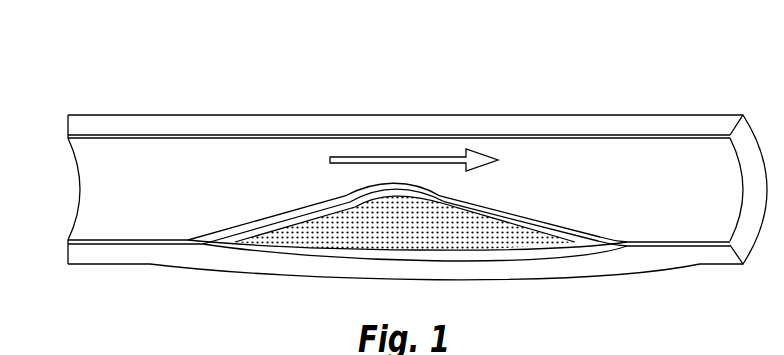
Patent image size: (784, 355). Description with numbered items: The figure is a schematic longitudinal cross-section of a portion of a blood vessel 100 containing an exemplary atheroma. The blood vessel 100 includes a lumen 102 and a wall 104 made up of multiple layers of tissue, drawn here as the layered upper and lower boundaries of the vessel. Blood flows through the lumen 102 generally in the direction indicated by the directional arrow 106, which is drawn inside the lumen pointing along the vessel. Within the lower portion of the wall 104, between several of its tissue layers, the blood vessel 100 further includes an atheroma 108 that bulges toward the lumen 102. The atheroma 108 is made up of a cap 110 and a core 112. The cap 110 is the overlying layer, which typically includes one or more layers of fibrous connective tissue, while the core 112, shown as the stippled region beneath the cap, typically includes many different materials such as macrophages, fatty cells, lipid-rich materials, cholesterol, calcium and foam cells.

The blood vessel 100 is at (389, 165).
The lumen 102 is at (690, 193).
The wall 104 is at (61, 238).
The directional arrow 106 is at (405, 158).
The atheroma 108 is at (399, 239).
The cap 110 is at (513, 219).
The core 112 is at (335, 240).